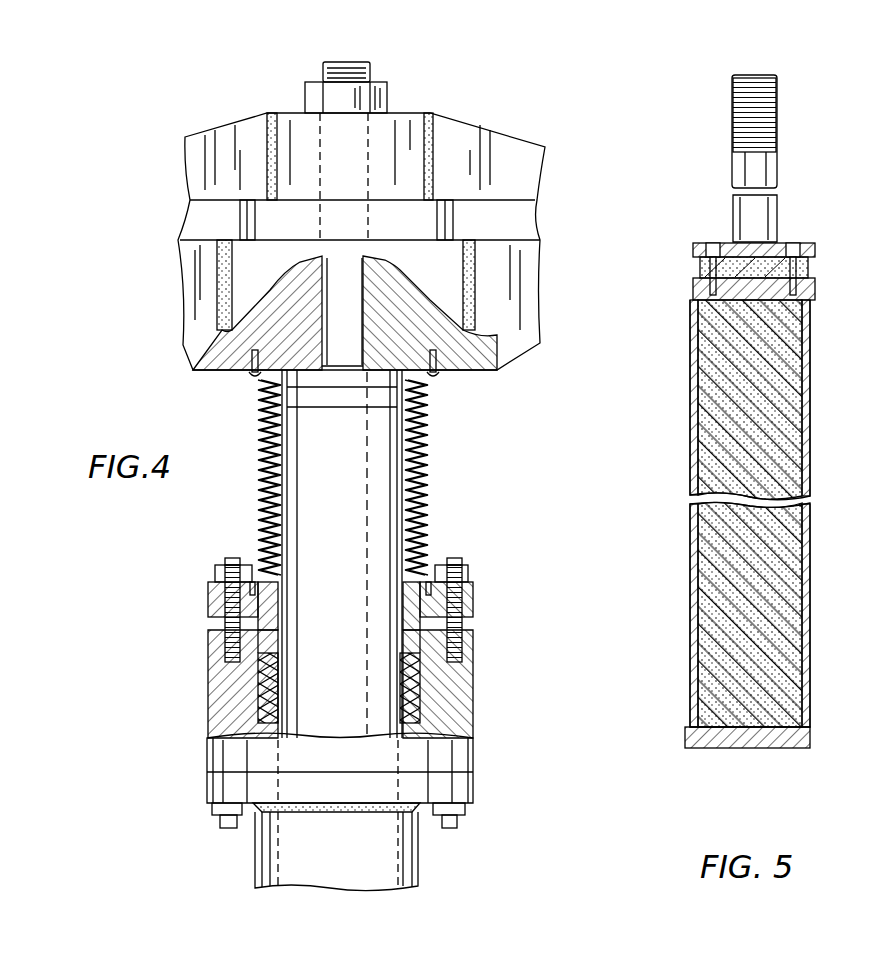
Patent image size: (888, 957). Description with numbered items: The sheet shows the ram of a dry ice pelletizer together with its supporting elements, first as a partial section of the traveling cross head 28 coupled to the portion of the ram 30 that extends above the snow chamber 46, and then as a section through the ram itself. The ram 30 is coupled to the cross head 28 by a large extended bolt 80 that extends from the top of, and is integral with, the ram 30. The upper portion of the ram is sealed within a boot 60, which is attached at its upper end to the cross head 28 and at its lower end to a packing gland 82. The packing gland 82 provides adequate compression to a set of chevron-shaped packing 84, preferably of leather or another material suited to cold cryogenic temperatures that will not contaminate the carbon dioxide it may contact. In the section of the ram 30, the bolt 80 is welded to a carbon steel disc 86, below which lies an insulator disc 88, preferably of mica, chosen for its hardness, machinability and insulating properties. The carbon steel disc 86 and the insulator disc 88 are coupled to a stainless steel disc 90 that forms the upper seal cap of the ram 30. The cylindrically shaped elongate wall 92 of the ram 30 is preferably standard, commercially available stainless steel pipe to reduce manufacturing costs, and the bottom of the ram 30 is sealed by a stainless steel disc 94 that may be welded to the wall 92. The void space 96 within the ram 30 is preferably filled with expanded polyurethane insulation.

In FIG. 4, the extended bolt 80 is at (372, 68).
In FIG. 5, the extended bolt 80 is at (778, 125).
In FIG. 4, the traveling cross head 28 is at (512, 147).
In FIG. 4, the ram 30 is at (408, 437).
In FIG. 5, the ram 30 is at (810, 660).
In FIG. 4, the boot 60 is at (418, 490).
In FIG. 4, the packing gland 82 is at (477, 598).
In FIG. 4, the chevron-shaped packing 84 is at (415, 697).
In FIG. 4, the snow chamber 46 is at (418, 862).
In FIG. 5, the carbon steel disc 86 is at (815, 250).
In FIG. 5, the insulator disc 88 is at (815, 268).
In FIG. 5, the stainless steel disc 90 is at (815, 292).
In FIG. 5, the elongate wall 92 is at (806, 412).
In FIG. 5, the void space 96 is at (790, 563).
In FIG. 5, the stainless steel disc 94 is at (773, 748).